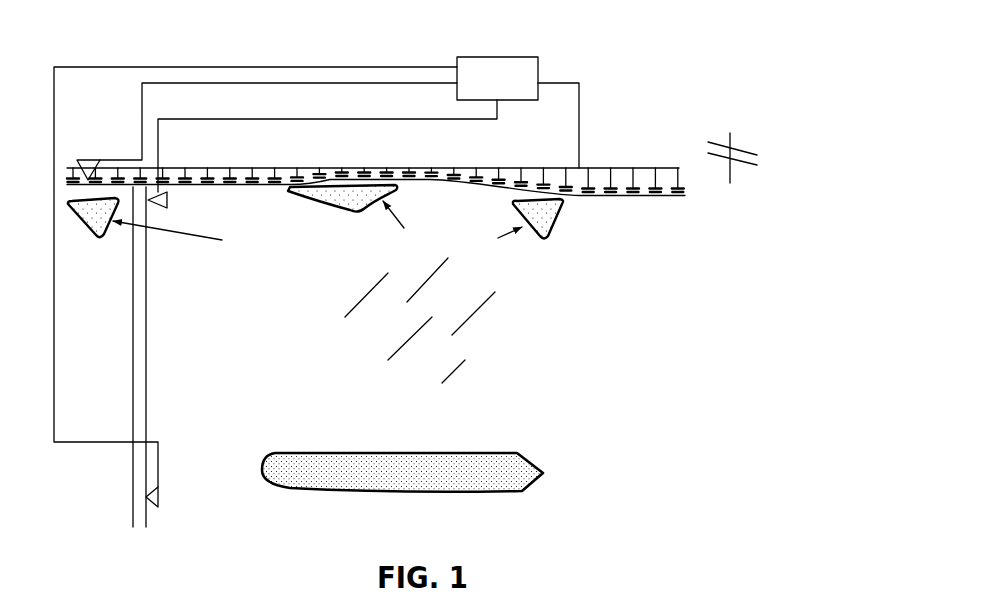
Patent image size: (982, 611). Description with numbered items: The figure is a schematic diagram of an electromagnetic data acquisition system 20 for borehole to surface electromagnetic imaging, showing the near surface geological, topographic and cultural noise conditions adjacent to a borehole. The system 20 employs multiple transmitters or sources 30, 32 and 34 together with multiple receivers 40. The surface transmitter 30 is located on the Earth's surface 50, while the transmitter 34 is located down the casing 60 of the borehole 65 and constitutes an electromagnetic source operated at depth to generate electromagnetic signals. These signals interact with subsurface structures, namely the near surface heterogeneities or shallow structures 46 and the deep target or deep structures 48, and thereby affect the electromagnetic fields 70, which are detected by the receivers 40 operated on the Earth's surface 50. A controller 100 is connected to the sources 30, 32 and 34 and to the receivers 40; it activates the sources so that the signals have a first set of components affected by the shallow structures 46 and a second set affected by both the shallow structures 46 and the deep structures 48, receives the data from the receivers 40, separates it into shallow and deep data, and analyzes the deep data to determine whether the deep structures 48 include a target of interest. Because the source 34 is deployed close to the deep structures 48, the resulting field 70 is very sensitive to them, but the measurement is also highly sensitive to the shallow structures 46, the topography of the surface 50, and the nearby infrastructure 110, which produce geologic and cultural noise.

The electromagnetic data acquisition system 20 is at (640, 85).
The controller 100 is at (540, 66).
The receivers 40 is at (590, 194).
The Earth's surface 50 is at (645, 197).
The infrastructure 110 is at (792, 153).
The surface transmitter 30 is at (78, 158).
The transmitter 32 is at (166, 203).
The borehole transmitter 34 is at (165, 485).
The casing 60 is at (146, 410).
The borehole 65 is at (140, 533).
The near surface heterogeneities 46 is at (364, 273).
The electromagnetic fields 70 is at (477, 313).
The deep target 48 is at (442, 452).